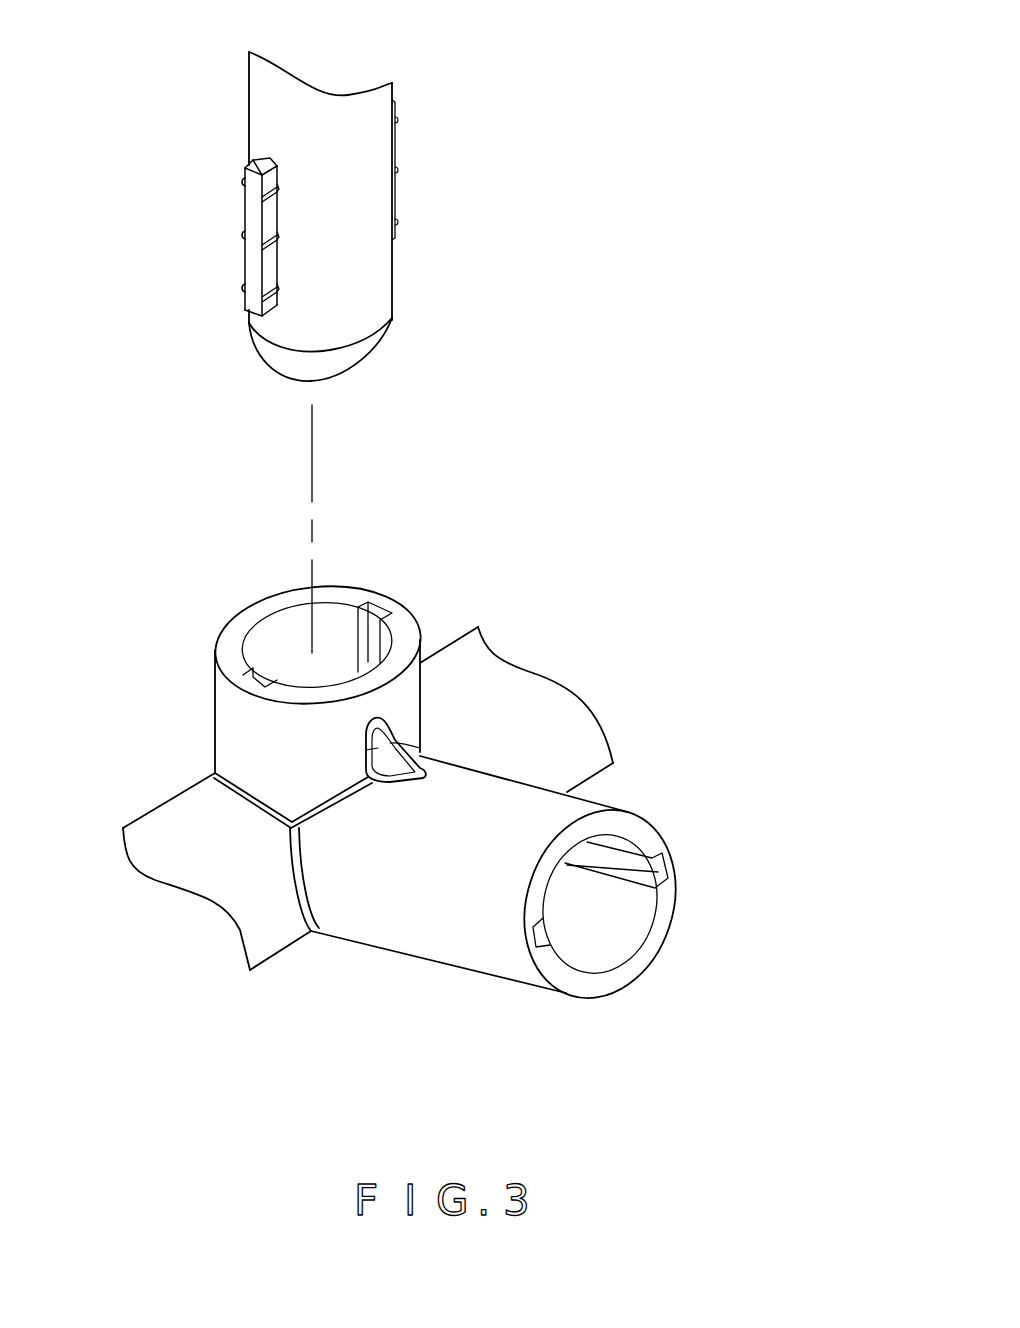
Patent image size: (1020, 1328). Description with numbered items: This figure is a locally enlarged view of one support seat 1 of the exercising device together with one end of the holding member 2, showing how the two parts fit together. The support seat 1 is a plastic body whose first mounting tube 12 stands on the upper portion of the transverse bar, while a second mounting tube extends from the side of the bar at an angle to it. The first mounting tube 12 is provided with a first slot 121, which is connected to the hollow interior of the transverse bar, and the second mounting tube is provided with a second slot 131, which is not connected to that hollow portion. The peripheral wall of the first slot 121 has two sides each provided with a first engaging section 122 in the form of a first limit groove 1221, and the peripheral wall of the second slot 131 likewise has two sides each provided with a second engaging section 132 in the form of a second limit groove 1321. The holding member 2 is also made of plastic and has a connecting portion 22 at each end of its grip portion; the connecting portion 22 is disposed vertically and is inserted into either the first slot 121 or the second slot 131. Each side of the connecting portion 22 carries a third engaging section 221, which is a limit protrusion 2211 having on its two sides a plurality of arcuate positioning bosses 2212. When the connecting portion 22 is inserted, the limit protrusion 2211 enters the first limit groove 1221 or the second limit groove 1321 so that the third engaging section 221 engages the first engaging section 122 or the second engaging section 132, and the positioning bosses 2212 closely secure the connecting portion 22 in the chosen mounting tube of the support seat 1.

The support seat 1 is at (152, 765).
The first mounting tube 12 is at (235, 705).
The first slot 121 is at (278, 635).
The first engaging section 122 is at (377, 612).
The first limit groove 1221 is at (375, 637).
The second slot 131 is at (596, 925).
The second engaging section 132 is at (660, 872).
The second limit groove 1321 is at (600, 894).
The holding member 2 is at (222, 74).
The connecting portion 22 is at (252, 136).
The third engaging section 221 is at (395, 145).
The limit protrusion 2211 is at (250, 247).
The arcuate positioning boss 2212 is at (274, 191).